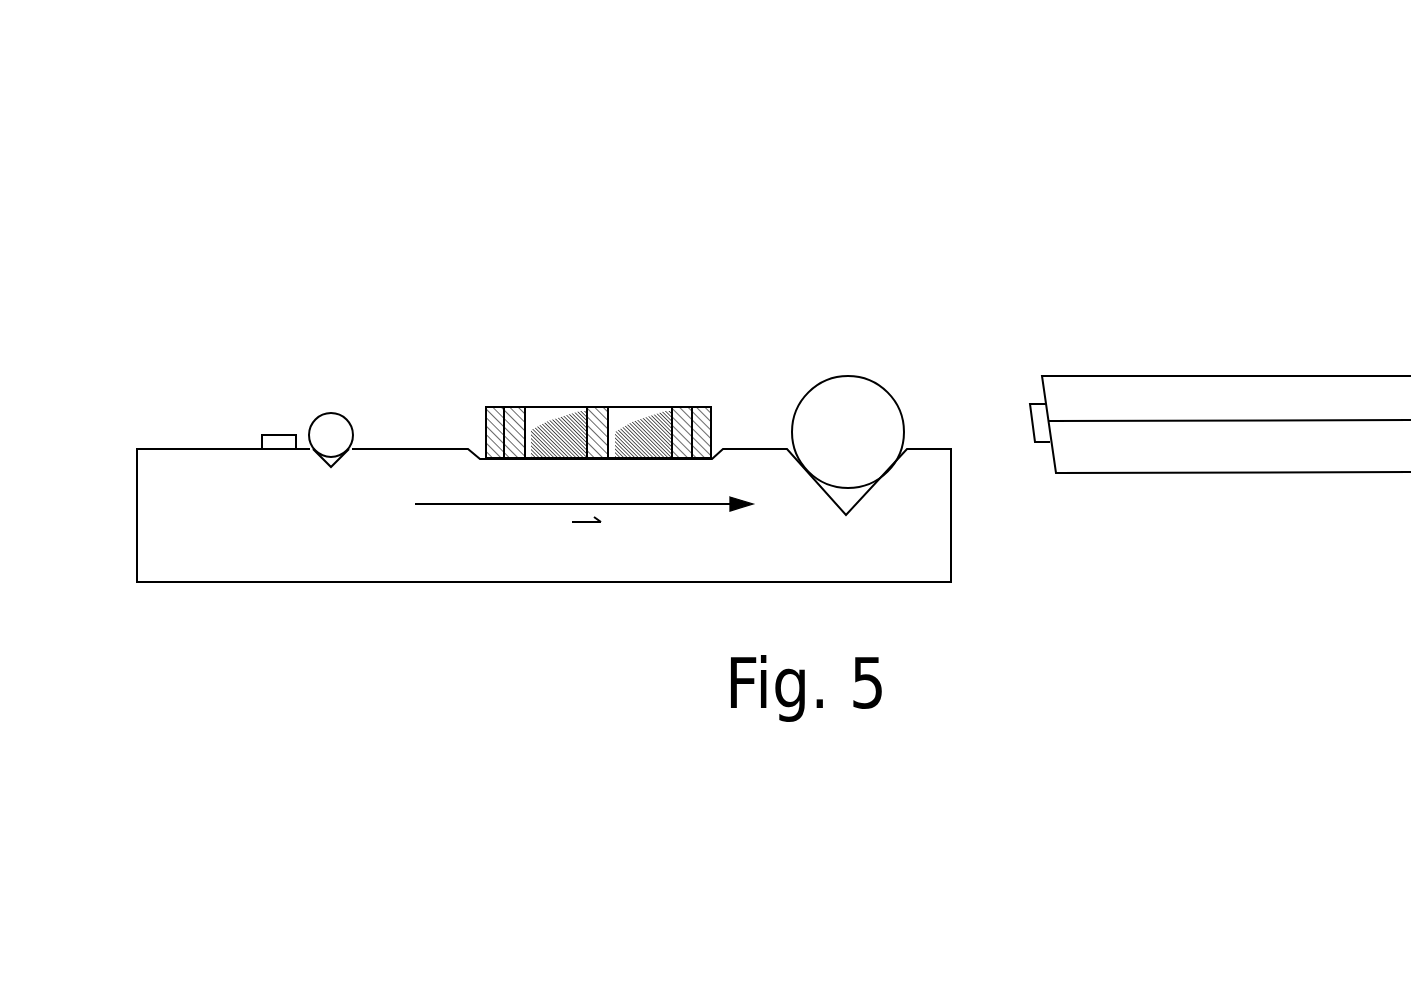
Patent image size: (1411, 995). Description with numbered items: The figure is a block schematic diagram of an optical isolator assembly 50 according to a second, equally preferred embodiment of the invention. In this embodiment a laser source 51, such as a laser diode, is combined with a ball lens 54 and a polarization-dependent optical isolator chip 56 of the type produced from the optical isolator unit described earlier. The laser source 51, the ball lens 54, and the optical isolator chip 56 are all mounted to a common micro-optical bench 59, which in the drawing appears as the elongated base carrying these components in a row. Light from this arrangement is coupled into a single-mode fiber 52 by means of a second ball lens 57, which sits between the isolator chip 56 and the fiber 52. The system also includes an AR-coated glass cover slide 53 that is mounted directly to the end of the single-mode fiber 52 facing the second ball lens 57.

The optical isolator assembly 50 is at (502, 232).
The laser source 51 is at (258, 423).
The single-mode fiber 52 is at (1273, 376).
The AR-coated glass cover slide 53 is at (1020, 409).
The ball lens 54 is at (330, 412).
The polarization-dependent optical isolator chip 56 is at (597, 407).
The second ball lens 57 is at (810, 382).
The micro-optical bench 59 is at (410, 463).